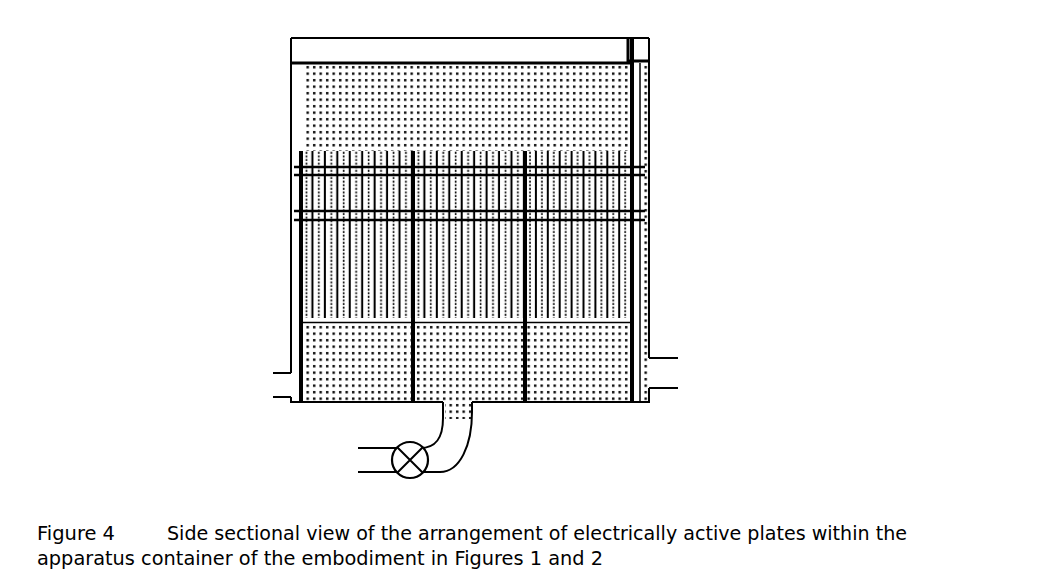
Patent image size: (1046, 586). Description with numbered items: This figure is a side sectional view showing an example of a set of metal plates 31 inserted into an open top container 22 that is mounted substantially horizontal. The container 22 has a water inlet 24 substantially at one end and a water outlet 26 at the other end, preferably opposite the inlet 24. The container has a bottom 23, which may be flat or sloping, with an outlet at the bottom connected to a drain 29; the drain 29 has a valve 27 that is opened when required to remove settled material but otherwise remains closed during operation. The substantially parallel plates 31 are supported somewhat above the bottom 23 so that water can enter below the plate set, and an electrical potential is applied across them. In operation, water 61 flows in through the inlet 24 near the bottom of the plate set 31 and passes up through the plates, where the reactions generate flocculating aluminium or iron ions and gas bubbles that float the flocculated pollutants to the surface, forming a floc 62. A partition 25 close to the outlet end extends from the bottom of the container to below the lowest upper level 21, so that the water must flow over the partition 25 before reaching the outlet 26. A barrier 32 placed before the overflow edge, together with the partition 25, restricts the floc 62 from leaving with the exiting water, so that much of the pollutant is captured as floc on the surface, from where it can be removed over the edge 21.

The lowest upper level 21 is at (318, 63).
The open top container 22 is at (288, 183).
The sloping bottom 23 is at (568, 358).
The water inlet 24 is at (272, 383).
The partition 25 is at (641, 218).
The water outlet 26 is at (653, 373).
The valve 27 is at (434, 456).
The drain 29 is at (367, 456).
The set of metal plates 31 is at (460, 282).
The barrier 32 is at (628, 53).
The water 61 is at (452, 127).
The floc 62 is at (580, 68).